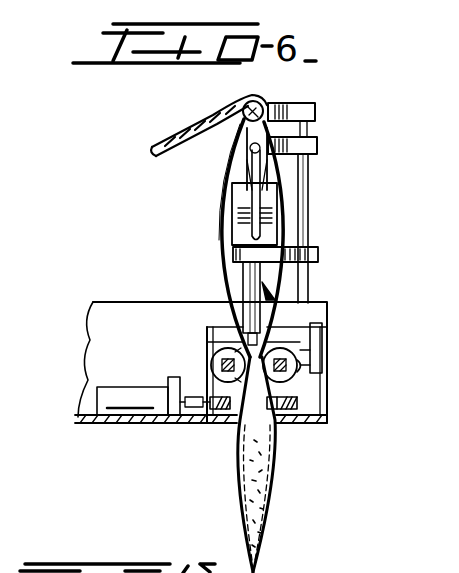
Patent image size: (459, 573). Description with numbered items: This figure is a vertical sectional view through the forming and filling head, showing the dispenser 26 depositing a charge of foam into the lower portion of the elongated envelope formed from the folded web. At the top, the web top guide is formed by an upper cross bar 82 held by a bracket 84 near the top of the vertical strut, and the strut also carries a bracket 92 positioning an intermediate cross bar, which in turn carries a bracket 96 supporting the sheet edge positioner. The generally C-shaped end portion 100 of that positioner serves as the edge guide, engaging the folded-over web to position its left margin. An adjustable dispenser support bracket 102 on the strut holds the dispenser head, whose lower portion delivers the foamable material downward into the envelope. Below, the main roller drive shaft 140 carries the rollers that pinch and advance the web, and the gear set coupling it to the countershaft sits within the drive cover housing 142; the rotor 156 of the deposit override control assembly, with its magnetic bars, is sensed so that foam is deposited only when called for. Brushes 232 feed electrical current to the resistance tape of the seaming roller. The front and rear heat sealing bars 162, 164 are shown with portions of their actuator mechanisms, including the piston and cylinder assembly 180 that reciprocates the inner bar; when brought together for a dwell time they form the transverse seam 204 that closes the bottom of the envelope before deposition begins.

The upper cross bar 82 is at (265, 102).
The bracket 84 is at (315, 111).
The bracket 92 is at (315, 149).
The bracket 96 is at (308, 188).
The end portion 100 is at (243, 222).
The adjustable dispenser support bracket 102 is at (263, 232).
The dispenser 26 is at (307, 287).
The drive cover housing 142 is at (182, 335).
The piston and cylinder assembly 180 is at (138, 397).
The rotor 156 is at (285, 346).
The brushes 232 is at (300, 381).
The main roller drive shaft 140 is at (318, 402).
The heat sealing bar 164 is at (288, 424).
The heat sealing bar 162 is at (212, 428).
The transverse seam 204 is at (262, 571).